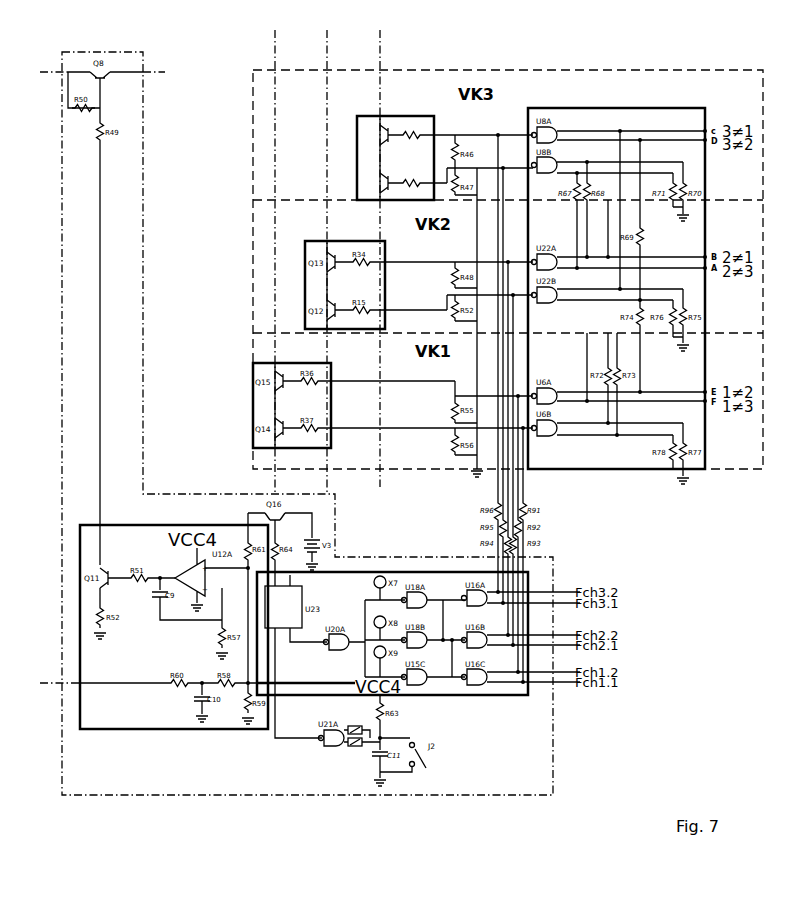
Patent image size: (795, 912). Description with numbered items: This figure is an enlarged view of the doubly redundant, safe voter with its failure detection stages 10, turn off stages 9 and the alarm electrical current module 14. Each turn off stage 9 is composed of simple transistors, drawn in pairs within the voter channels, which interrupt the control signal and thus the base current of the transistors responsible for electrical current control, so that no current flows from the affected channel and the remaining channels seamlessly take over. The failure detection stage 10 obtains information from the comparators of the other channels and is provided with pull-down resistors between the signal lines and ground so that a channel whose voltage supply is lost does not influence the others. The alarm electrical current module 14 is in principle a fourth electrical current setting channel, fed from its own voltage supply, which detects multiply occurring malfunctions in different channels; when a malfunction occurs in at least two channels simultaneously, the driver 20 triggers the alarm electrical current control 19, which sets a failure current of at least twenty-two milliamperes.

The turn off stage 9 is at (403, 104).
The failure detection stage 10 is at (620, 62).
The alarm electrical current module 14 is at (288, 796).
The alarm electrical current control 19 is at (103, 730).
The driver 20 is at (533, 698).